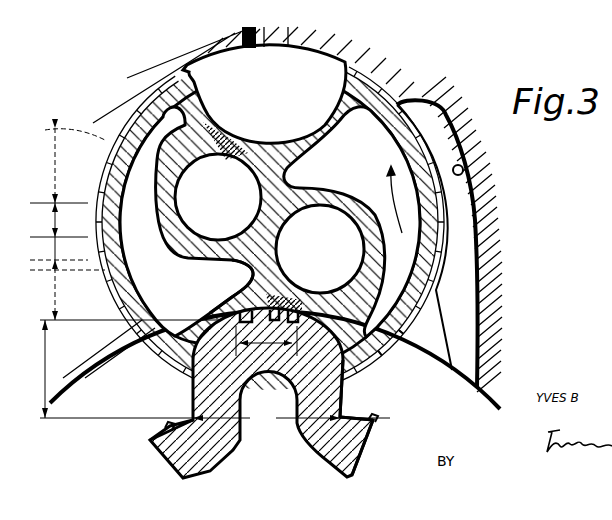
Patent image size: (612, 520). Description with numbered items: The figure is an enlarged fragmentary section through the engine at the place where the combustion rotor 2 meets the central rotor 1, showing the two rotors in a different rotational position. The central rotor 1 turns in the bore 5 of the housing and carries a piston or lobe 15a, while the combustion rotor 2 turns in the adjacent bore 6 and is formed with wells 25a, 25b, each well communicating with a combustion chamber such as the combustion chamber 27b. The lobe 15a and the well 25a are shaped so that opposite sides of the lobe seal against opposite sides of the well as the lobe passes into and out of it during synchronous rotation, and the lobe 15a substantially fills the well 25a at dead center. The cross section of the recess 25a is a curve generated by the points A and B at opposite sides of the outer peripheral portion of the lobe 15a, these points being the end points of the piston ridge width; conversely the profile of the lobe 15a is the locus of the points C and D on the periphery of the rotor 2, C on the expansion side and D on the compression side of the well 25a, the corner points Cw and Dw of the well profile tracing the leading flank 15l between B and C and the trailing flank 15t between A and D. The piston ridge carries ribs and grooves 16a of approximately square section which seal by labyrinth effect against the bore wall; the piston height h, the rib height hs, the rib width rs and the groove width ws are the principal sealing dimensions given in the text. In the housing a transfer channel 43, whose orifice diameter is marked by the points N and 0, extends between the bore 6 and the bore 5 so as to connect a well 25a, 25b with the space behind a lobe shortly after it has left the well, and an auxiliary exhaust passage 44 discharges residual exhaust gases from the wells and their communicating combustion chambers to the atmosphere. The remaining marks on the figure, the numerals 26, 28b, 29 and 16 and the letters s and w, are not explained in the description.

The combustion rotor 2 is at (178, 88).
The auxiliary exhaust passage 44 is at (289, 47).
The bore for the combustion rotor 6 is at (319, 54).
The rotor sleeve segments 26 is at (354, 72).
The end point of transfer channel orifice diameter N is at (402, 100).
The end point of transfer channel orifice diameter 0 is at (472, 187).
The transfer channel 43 is at (466, 163).
The rotor cavity 29 is at (397, 151).
The well of the combustion rotor 25b is at (205, 100).
The saturable bridge 28b is at (250, 142).
The combustion chamber 27b is at (260, 202).
The ribs and grooves 16a is at (245, 291).
The generating point of the well profile A is at (224, 304).
The well of the combustion rotor 25a is at (210, 325).
The generating point of the well profile B is at (307, 307).
The leading piston flank 15l is at (364, 334).
The trailing piston flank 15t is at (183, 365).
The lobe of the central rotor 15a is at (294, 381).
The bore for the central rotor 5 is at (437, 368).
The wedge notch 16 is at (370, 425).
The central rotor 1 is at (373, 447).
The point on the periphery of the combustion rotor D is at (193, 419).
The corner point of the well profile Dw is at (169, 410).
The point on the periphery of the combustion rotor C is at (343, 418).
The corner point of the well profile Cw is at (347, 375).
The gap s is at (400, 353).
The tooth width w is at (265, 420).
The piston height h is at (122, 369).
The height of sealing ribs hs is at (72, 161).
The width of grooves intermediate adjacent ribs ws is at (59, 231).
The width of sealing ribs rs is at (67, 290).